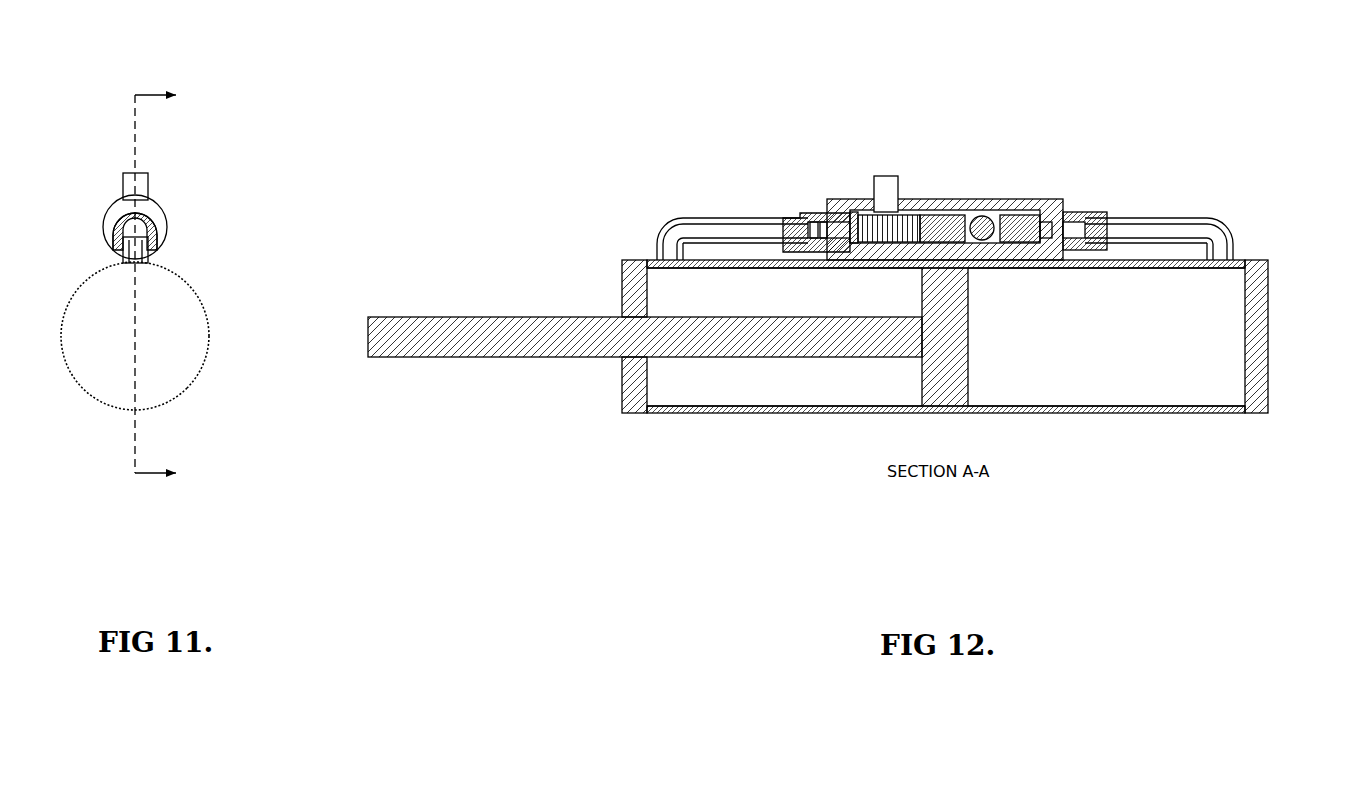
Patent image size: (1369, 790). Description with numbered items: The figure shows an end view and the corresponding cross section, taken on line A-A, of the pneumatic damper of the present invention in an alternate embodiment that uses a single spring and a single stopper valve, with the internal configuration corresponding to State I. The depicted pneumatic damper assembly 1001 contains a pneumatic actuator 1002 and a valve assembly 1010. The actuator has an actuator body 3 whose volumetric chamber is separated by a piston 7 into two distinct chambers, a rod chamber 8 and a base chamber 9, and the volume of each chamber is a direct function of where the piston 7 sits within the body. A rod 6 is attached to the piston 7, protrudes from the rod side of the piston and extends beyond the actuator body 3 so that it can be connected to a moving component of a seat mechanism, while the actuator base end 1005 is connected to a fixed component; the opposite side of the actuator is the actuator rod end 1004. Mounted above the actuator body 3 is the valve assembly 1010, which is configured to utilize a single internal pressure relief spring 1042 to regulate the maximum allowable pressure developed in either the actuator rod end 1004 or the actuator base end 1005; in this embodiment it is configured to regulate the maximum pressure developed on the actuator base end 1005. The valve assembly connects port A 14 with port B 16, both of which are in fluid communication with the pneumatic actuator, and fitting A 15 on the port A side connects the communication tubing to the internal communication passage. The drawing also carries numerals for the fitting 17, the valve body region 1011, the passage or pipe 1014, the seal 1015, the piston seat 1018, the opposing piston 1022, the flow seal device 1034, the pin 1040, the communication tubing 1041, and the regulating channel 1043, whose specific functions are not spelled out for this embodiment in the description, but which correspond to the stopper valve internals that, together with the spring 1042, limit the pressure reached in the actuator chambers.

In FIG. 11, the actuator body 3 is at (205, 362).
In FIG. 12, the actuator body 3 is at (908, 397).
In FIG. 12, the rod 6 is at (450, 313).
In FIG. 12, the piston 7 is at (970, 347).
In FIG. 12, the rod chamber 8 is at (678, 382).
In FIG. 12, the base chamber 9 is at (1128, 357).
In FIG. 12, the port A 14 is at (1220, 229).
In FIG. 12, the fitting A 15 is at (1084, 209).
In FIG. 12, the port B 16 is at (656, 224).
In FIG. 12, the first fitting 17 is at (792, 206).
In FIG. 11, the pneumatic damper assembly 1001 is at (195, 247).
In FIG. 11, the pneumatic actuator 1002 is at (187, 403).
In FIG. 12, the pneumatic actuator 1002 is at (718, 420).
In FIG. 12, the actuator rod end 1004 is at (600, 375).
In FIG. 11, the actuator base end 1005 is at (105, 365).
In FIG. 12, the actuator base end 1005 is at (1267, 355).
In FIG. 11, the valve assembly 1010 is at (170, 208).
In FIG. 12, the valve assembly 1010 is at (973, 174).
In FIG. 11, the valve body end 1011 is at (110, 203).
In FIG. 12, the valve body end 1011 is at (824, 196).
In FIG. 11, the bore 1014 is at (140, 253).
In FIG. 11, the seal 1015 is at (108, 219).
In FIG. 12, the valve seat 1018 is at (1029, 209).
In FIG. 12, the sleeve 1022 is at (936, 209).
In FIG. 12, the ball 1034 is at (990, 212).
In FIG. 11, the pin 1040 is at (143, 165).
In FIG. 12, the pin 1040 is at (889, 162).
In FIG. 11, the pipe 1041 is at (120, 173).
In FIG. 12, the pipe 1041 is at (700, 216).
In FIG. 12, the internal pressure relief spring 1042 is at (852, 209).
In FIG. 12, the spring 1043 is at (859, 204).